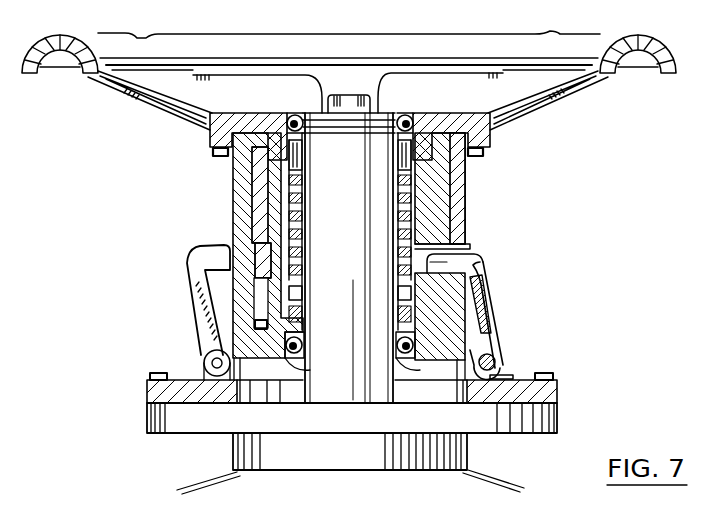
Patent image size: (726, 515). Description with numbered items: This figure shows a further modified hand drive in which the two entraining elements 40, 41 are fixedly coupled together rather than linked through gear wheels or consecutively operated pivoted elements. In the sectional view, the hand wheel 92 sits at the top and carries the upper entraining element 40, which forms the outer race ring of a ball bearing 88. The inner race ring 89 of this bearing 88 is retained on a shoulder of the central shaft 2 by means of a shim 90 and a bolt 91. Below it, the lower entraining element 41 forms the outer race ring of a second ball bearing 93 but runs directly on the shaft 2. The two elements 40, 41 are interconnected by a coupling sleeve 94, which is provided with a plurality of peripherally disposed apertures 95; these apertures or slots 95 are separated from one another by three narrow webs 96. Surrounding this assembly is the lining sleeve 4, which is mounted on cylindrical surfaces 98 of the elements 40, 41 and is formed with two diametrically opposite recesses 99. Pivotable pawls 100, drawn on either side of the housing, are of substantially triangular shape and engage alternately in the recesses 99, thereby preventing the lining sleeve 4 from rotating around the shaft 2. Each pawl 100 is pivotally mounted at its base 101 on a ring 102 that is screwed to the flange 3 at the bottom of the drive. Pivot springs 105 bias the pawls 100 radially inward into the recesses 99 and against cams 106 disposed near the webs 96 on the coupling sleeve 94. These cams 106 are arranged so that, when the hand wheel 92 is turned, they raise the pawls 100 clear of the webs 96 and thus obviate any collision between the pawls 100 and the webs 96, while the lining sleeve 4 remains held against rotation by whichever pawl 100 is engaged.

The shaft 2 is at (350, 188).
The flange 3 is at (147, 420).
The lining sleeve 4 is at (437, 186).
The entraining element 40 is at (494, 128).
The entraining element 41 is at (420, 368).
The ball bearing 88 is at (411, 112).
The inner race ring 89 is at (371, 112).
The shim 90 is at (320, 112).
The bolt 91 is at (351, 80).
The hand wheel 92 is at (610, 48).
The ball bearing 93 is at (413, 373).
The coupling sleeve 94 is at (460, 209).
The apertures 95 is at (456, 245).
The webs 96 is at (258, 247).
The cylindrical surfaces 98 is at (468, 160).
The recesses 99 is at (252, 220).
The pawls 100 is at (188, 267).
The base 101 is at (203, 358).
The ring 102 is at (147, 393).
The pivot springs 105 is at (484, 337).
The cams 106 is at (218, 293).